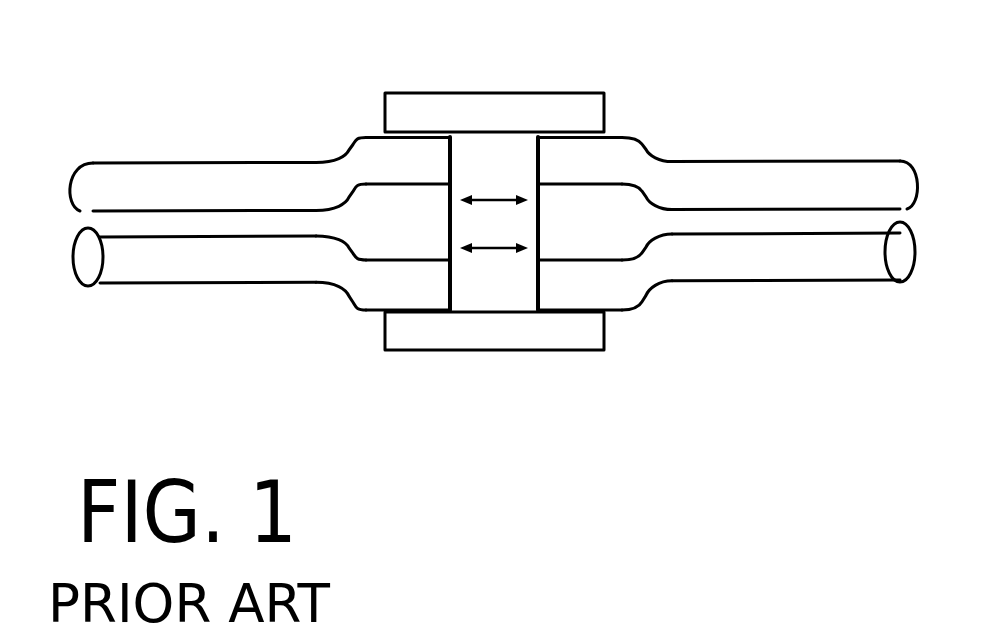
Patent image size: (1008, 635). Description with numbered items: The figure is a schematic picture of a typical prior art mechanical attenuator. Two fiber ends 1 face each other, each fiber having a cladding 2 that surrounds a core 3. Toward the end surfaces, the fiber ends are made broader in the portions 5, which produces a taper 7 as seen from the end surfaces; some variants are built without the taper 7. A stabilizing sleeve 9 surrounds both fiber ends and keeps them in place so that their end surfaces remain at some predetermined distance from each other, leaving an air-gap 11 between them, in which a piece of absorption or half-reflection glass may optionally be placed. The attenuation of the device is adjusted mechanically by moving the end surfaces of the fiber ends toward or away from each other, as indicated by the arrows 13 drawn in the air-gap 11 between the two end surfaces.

The fiber ends 1 is at (225, 129).
The cladding 2 is at (203, 180).
The core 3 is at (218, 260).
The broadened end portions 5 is at (363, 282).
The taper 7 is at (362, 137).
The stabilizing sleeve 9 is at (472, 108).
The air-gap 11 is at (505, 162).
The arrows 13 is at (495, 249).